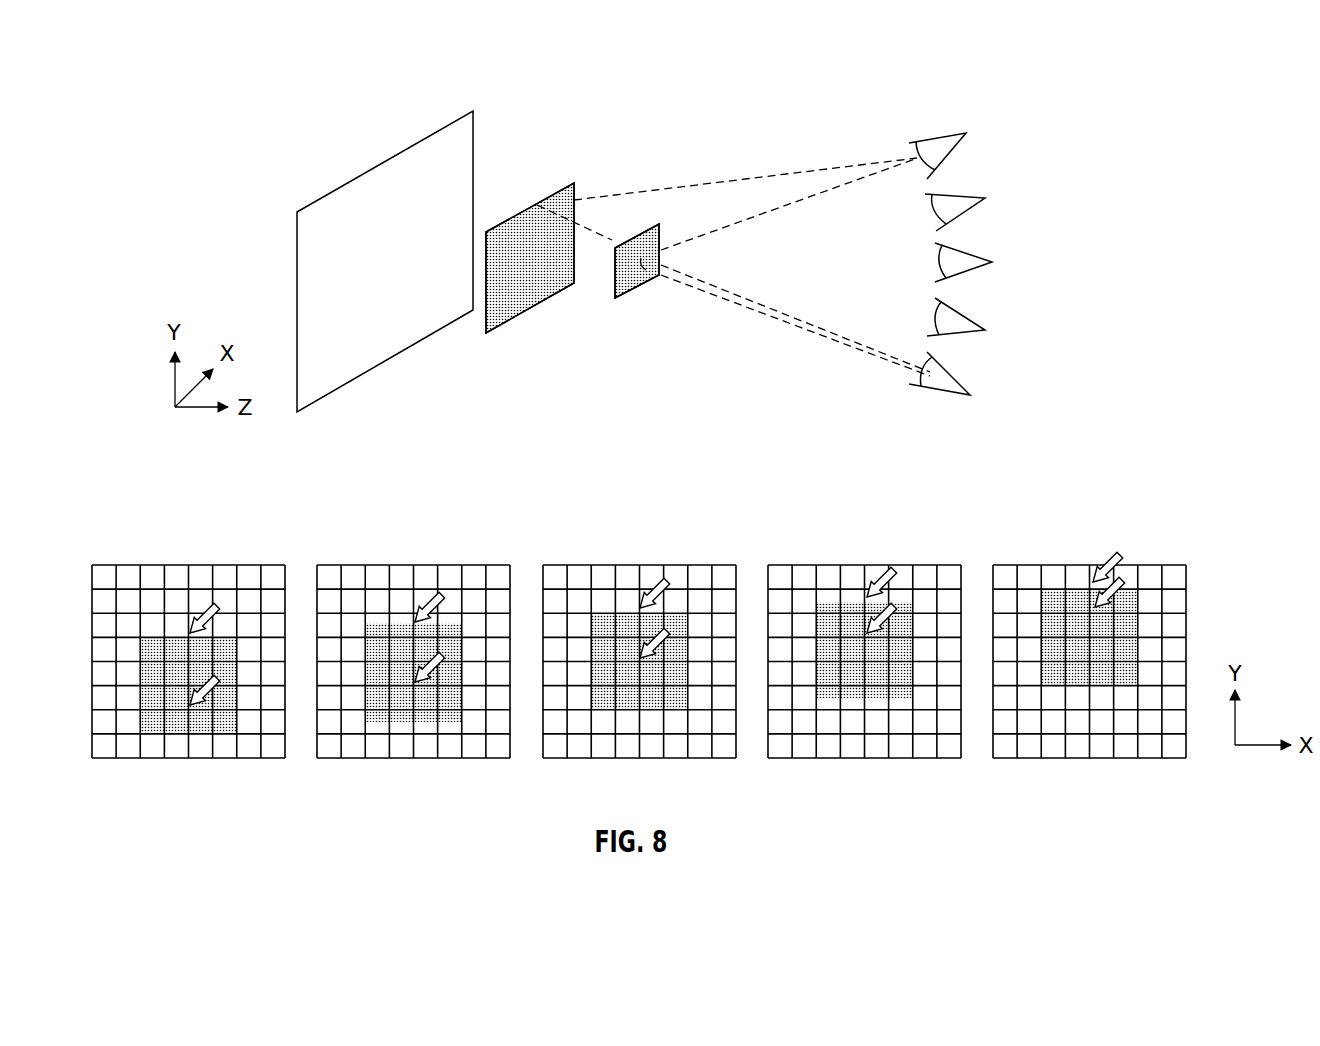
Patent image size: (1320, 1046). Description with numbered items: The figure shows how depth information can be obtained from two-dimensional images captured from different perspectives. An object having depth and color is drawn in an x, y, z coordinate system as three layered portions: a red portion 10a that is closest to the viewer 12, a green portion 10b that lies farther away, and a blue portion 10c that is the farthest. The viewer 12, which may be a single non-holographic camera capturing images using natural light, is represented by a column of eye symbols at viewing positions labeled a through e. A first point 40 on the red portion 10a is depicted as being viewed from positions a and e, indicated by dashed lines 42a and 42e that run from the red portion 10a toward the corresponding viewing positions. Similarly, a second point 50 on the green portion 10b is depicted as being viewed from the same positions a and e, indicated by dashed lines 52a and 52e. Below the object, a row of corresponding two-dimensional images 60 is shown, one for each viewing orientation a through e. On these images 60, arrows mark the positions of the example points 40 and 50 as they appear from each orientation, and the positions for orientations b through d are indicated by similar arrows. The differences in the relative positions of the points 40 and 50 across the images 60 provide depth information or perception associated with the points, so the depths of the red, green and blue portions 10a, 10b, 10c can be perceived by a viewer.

The blue portion 10c is at (388, 160).
The green portion 10b is at (538, 307).
The red portion 10a is at (623, 297).
The second point 50 is at (527, 203).
The first point 40 is at (647, 280).
The dashed line 52a is at (720, 183).
The dashed line 52e is at (612, 241).
The dashed line 42a is at (797, 206).
The dashed line 42e is at (695, 288).
The viewer or camera 12 is at (982, 108).
The 2-D images 60 is at (80, 642).